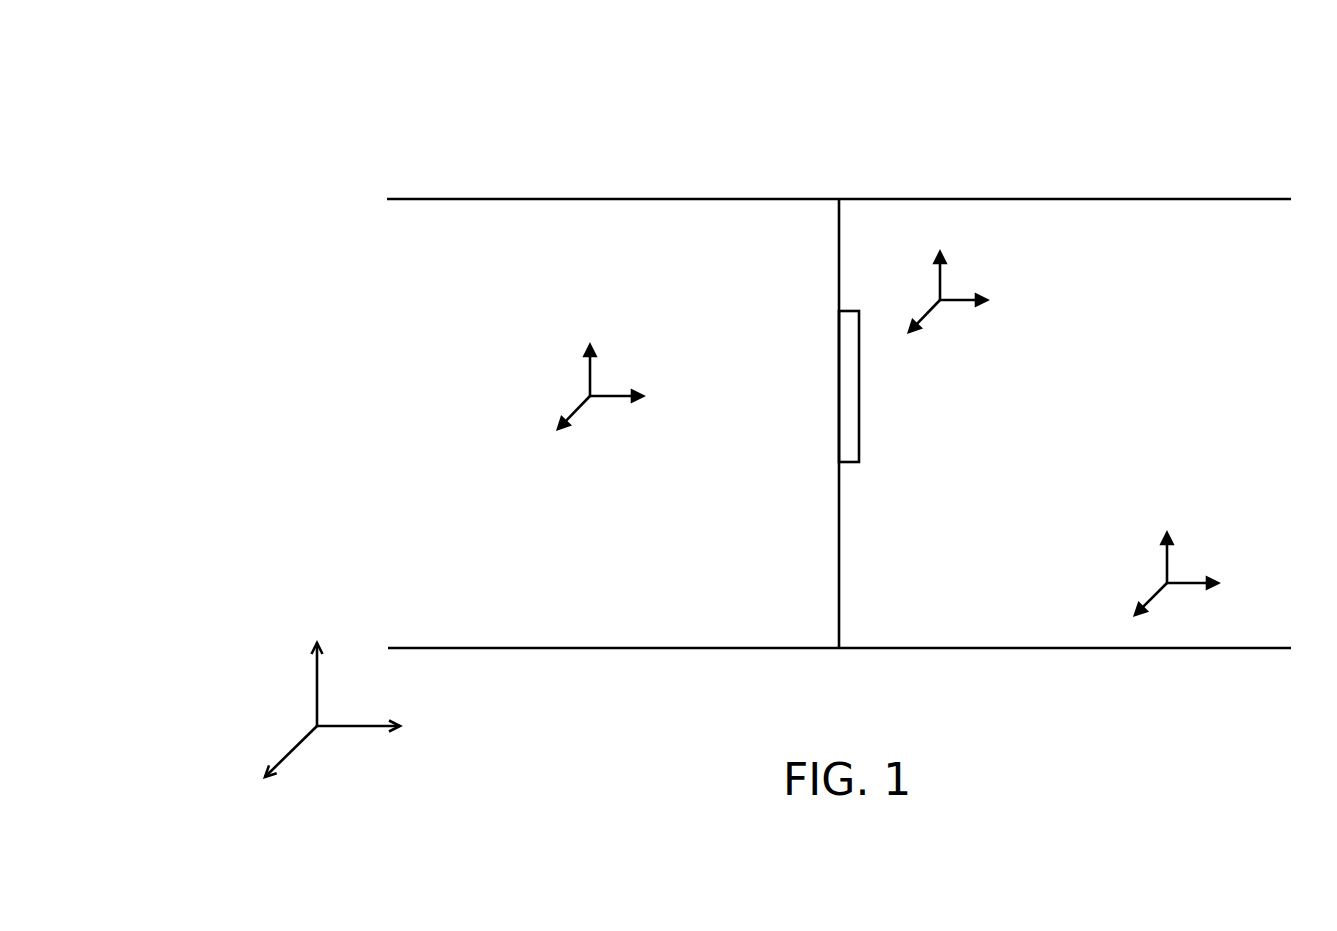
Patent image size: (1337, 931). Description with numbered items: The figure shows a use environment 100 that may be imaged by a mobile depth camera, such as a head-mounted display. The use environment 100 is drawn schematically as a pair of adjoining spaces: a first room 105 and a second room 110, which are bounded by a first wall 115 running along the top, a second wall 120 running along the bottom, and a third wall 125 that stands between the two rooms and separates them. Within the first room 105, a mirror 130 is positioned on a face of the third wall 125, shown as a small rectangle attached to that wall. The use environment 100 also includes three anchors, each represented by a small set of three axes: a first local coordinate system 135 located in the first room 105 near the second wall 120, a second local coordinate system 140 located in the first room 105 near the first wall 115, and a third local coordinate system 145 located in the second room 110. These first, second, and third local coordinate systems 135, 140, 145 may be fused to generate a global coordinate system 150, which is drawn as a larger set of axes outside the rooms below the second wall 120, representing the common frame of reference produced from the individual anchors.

The use environment 100 is at (1123, 111).
The first room 105 is at (900, 633).
The second room 110 is at (820, 633).
The first wall 115 is at (1120, 200).
The second wall 120 is at (1084, 647).
The third wall 125 is at (838, 259).
The mirror 130 is at (860, 443).
The first local coordinate system 135 is at (1192, 542).
The second local coordinate system 140 is at (966, 262).
The third local coordinate system 145 is at (560, 374).
The global coordinate system 150 is at (299, 694).